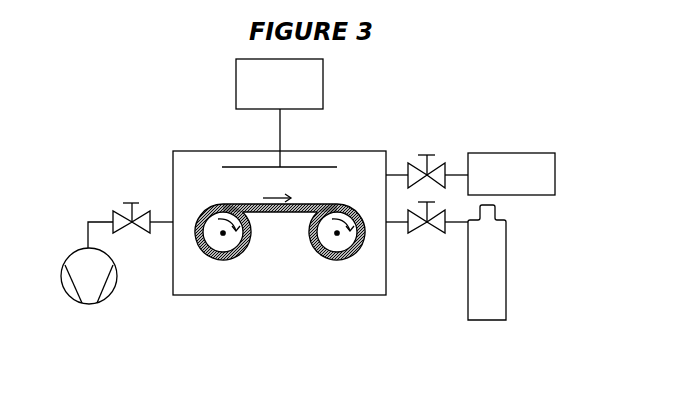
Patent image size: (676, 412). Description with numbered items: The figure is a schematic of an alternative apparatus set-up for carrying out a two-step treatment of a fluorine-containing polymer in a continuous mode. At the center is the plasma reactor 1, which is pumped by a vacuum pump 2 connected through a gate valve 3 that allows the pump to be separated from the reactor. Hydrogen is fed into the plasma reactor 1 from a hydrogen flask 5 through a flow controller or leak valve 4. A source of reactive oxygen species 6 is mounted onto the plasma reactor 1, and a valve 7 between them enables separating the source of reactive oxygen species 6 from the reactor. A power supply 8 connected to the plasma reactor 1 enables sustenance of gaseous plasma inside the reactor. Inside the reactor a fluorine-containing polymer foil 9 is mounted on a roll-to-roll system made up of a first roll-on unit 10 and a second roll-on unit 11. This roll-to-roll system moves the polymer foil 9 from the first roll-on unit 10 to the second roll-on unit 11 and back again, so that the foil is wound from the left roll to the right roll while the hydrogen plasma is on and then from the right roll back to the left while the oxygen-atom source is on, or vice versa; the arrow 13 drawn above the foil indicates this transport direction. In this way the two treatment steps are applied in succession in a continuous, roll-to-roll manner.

The plasma reactor 1 is at (279, 243).
The vacuum pump 2 is at (117, 270).
The gate valve 3 is at (138, 235).
The leak valve 4 is at (427, 235).
The hydrogen flask 5 is at (506, 262).
The source of reactive oxygen species 6 is at (511, 154).
The valve 7 is at (433, 158).
The power supply 8 is at (304, 113).
The fluorine-containing polymer foil 9 is at (280, 227).
The first roll-on unit 10 is at (243, 244).
The second roll-on unit 11 is at (349, 244).
The transport direction 13 is at (304, 188).